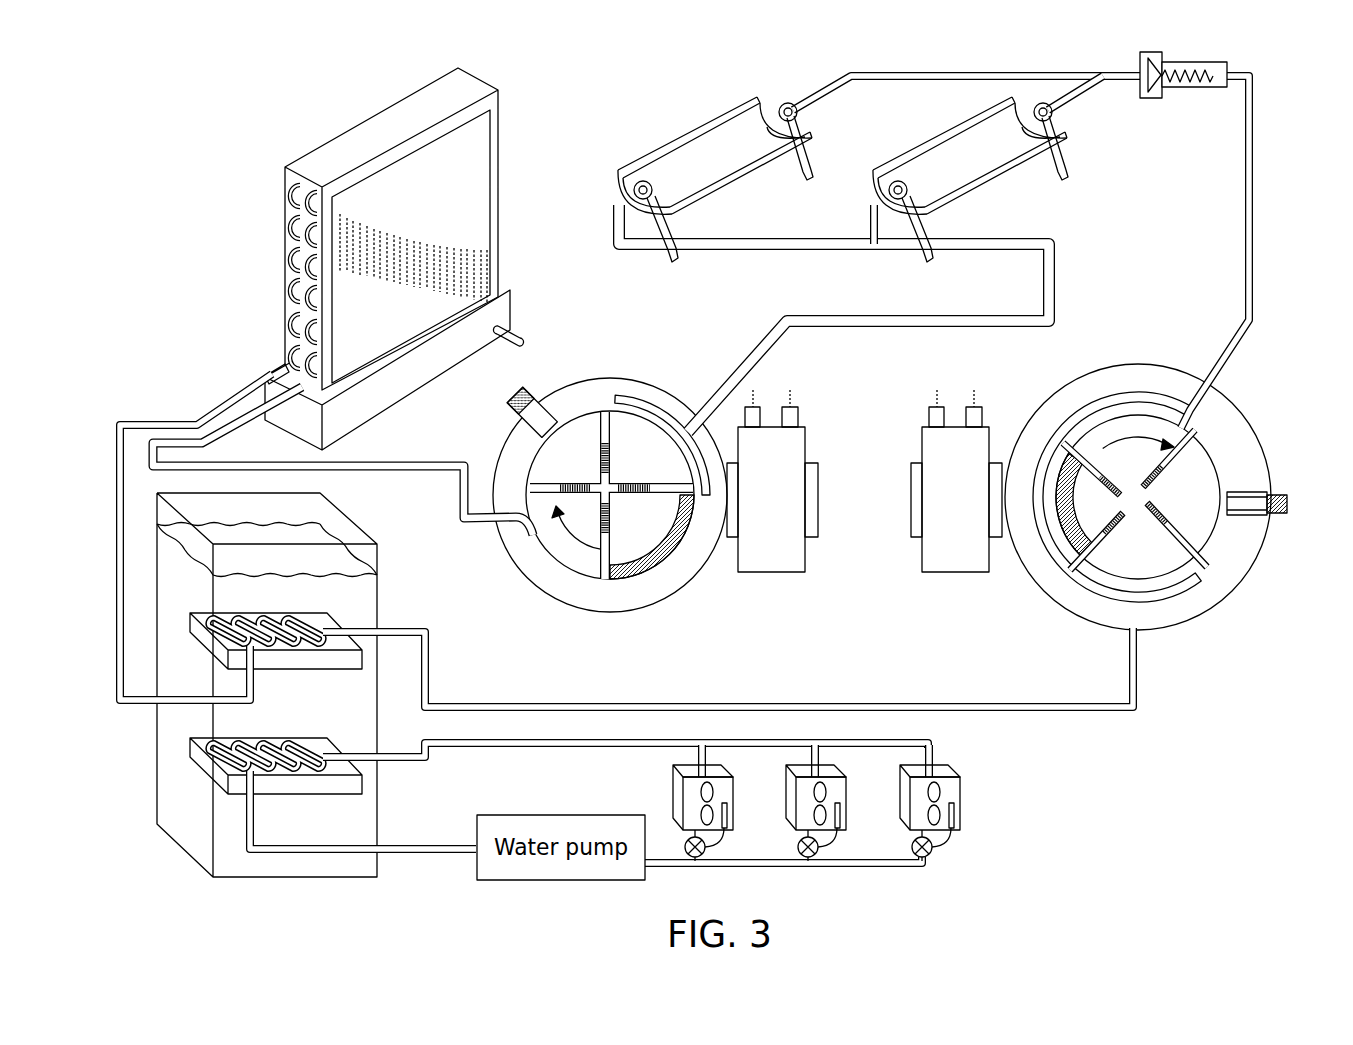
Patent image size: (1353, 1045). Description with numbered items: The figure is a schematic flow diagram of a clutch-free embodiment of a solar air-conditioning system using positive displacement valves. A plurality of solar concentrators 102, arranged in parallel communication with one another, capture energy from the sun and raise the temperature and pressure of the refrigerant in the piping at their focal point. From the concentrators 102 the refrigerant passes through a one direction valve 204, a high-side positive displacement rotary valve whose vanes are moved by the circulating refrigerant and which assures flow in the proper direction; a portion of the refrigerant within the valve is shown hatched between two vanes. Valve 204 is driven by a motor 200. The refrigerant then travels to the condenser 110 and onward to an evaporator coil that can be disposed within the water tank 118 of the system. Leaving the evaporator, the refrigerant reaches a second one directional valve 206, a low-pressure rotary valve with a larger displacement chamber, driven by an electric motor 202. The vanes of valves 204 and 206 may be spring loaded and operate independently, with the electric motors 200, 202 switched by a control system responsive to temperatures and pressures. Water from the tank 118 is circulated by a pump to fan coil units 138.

The concentrators 102 is at (688, 130).
The condenser 110 is at (335, 137).
The water tank 118 is at (157, 789).
The fan coil units 138 is at (958, 803).
The motor 200 is at (772, 573).
The electric motor 202 is at (940, 130).
The valve 204 is at (612, 598).
The second one directional valve 206 is at (1248, 567).